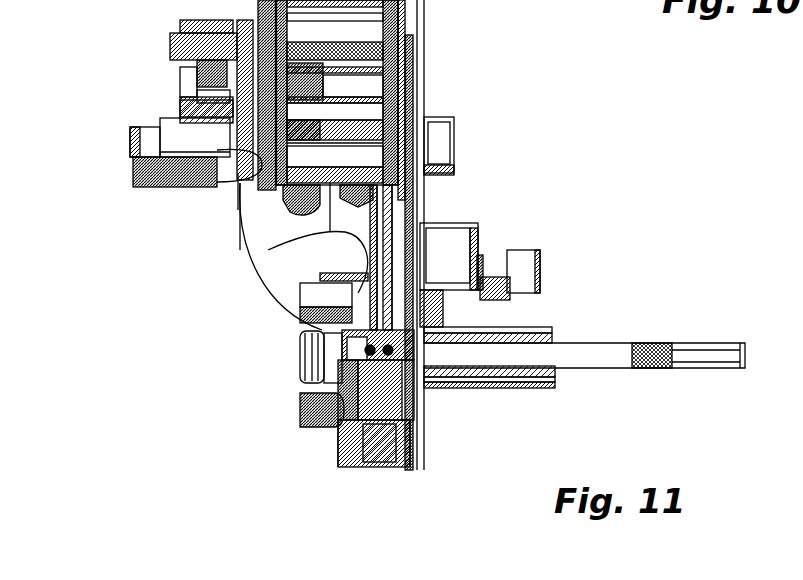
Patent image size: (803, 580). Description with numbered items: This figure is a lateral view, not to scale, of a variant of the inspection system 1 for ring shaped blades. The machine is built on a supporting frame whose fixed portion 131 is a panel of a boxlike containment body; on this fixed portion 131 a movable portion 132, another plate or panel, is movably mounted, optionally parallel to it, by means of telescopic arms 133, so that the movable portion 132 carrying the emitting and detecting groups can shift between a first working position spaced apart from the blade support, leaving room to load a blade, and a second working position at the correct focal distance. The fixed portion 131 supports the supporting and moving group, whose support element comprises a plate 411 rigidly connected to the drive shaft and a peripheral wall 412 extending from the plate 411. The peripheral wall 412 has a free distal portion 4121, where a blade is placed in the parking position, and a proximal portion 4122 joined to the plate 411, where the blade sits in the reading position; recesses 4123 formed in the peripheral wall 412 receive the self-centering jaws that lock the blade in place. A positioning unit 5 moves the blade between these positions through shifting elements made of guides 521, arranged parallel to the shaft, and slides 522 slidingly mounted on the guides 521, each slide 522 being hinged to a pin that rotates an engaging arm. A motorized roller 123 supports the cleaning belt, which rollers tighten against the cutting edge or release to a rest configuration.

The system 1 is at (128, 306).
The positioning unit 5 is at (590, 328).
The motorized roller 123 is at (347, 463).
The fixed portion 131 is at (410, 465).
The movable portion 132 is at (278, 16).
The telescopic arms 133 is at (376, 233).
The plate 411 is at (308, 240).
The peripheral wall 412 is at (327, 433).
The free distal portion 4121 is at (303, 353).
The proximal portion 4122 is at (345, 302).
The recesses 4123 is at (327, 387).
The guides 521 is at (533, 353).
The slides 522 is at (428, 360).